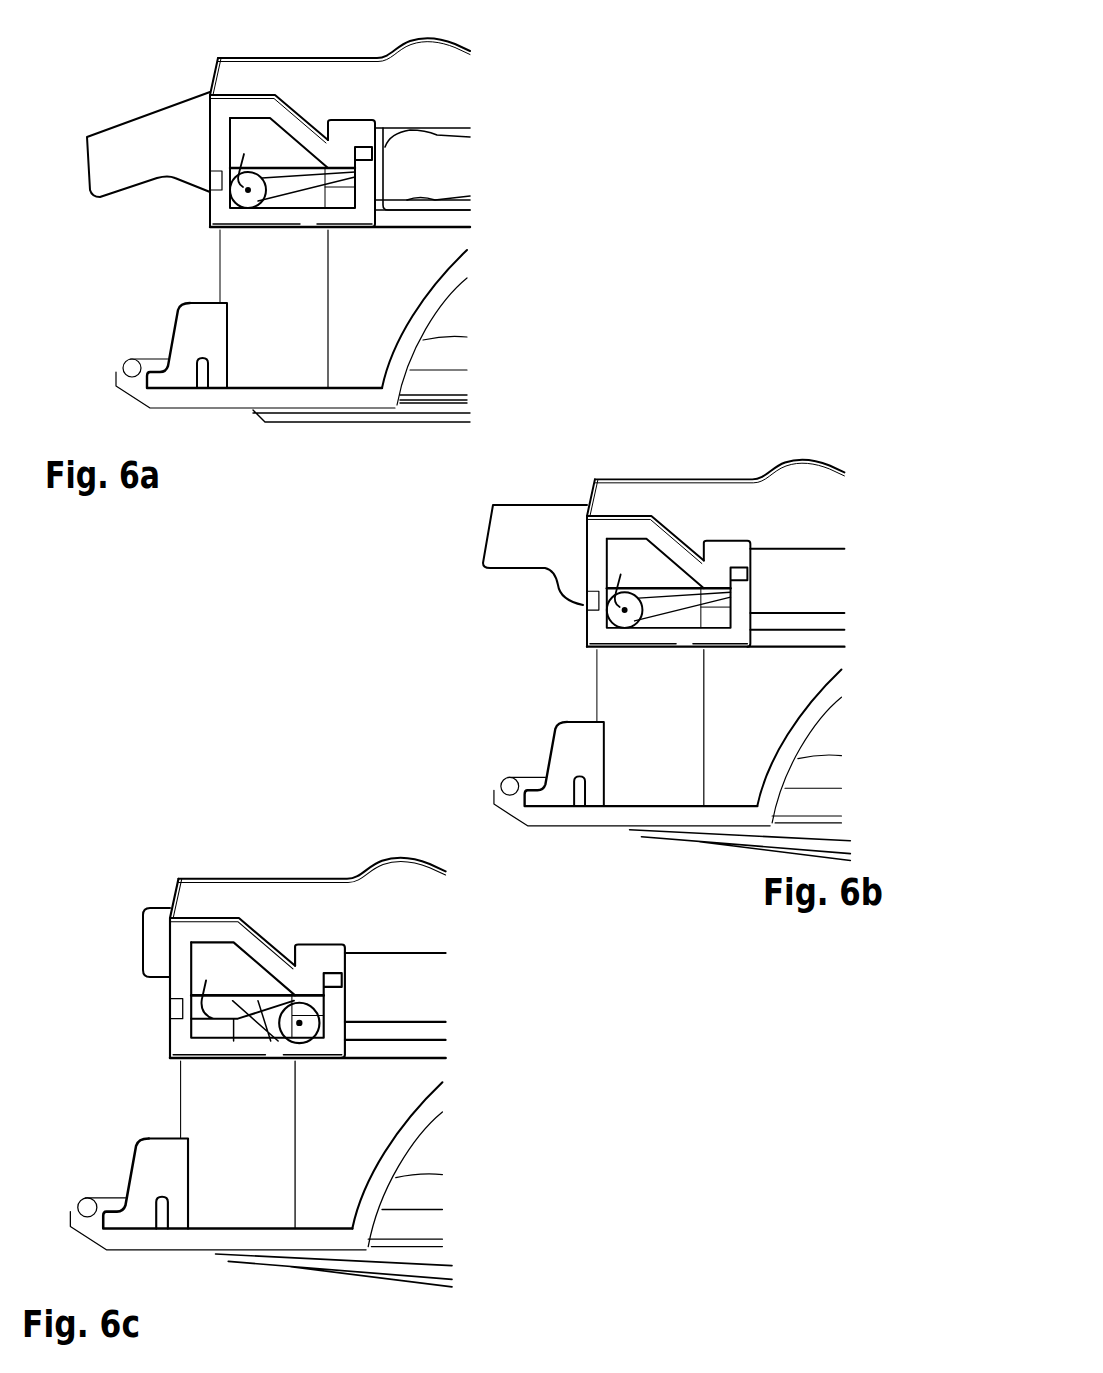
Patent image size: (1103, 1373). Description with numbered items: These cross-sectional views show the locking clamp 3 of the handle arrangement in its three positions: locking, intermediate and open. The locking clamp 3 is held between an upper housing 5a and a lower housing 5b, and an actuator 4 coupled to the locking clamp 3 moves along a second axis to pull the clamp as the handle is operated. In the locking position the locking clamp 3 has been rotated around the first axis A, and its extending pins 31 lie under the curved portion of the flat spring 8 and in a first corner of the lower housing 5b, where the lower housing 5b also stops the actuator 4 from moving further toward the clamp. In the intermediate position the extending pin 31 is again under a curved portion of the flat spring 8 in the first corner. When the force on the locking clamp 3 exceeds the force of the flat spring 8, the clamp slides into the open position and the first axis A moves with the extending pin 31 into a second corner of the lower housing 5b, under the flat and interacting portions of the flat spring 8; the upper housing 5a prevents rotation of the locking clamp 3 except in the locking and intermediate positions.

In FIG. 6A, the locking clamp 3 is at (168, 130).
In FIG. 6B, the locking clamp 3 is at (525, 530).
In FIG. 6C, the locking clamp 3 is at (155, 950).
In FIG. 6A, the actuator 4 is at (428, 173).
In FIG. 6A, the upper housing 5a is at (413, 82).
In FIG. 6B, the upper housing 5a is at (707, 505).
In FIG. 6C, the upper housing 5a is at (407, 927).
In FIG. 6A, the lower housing 5b is at (212, 208).
In FIG. 6B, the lower housing 5b is at (597, 650).
In FIG. 6C, the lower housing 5b is at (180, 1027).
In FIG. 6A, the flat spring 8 is at (258, 200).
In FIG. 6B, the flat spring 8 is at (607, 587).
In FIG. 6C, the flat spring 8 is at (318, 998).
In FIG. 6A, the extending pin 31 is at (260, 200).
In FIG. 6B, the extending pin 31 is at (622, 612).
In FIG. 6C, the extending pin 31 is at (305, 1000).
In FIG. 6A, the first axis A is at (248, 192).
In FIG. 6B, the first axis A is at (600, 638).
In FIG. 6C, the first axis A is at (298, 1022).